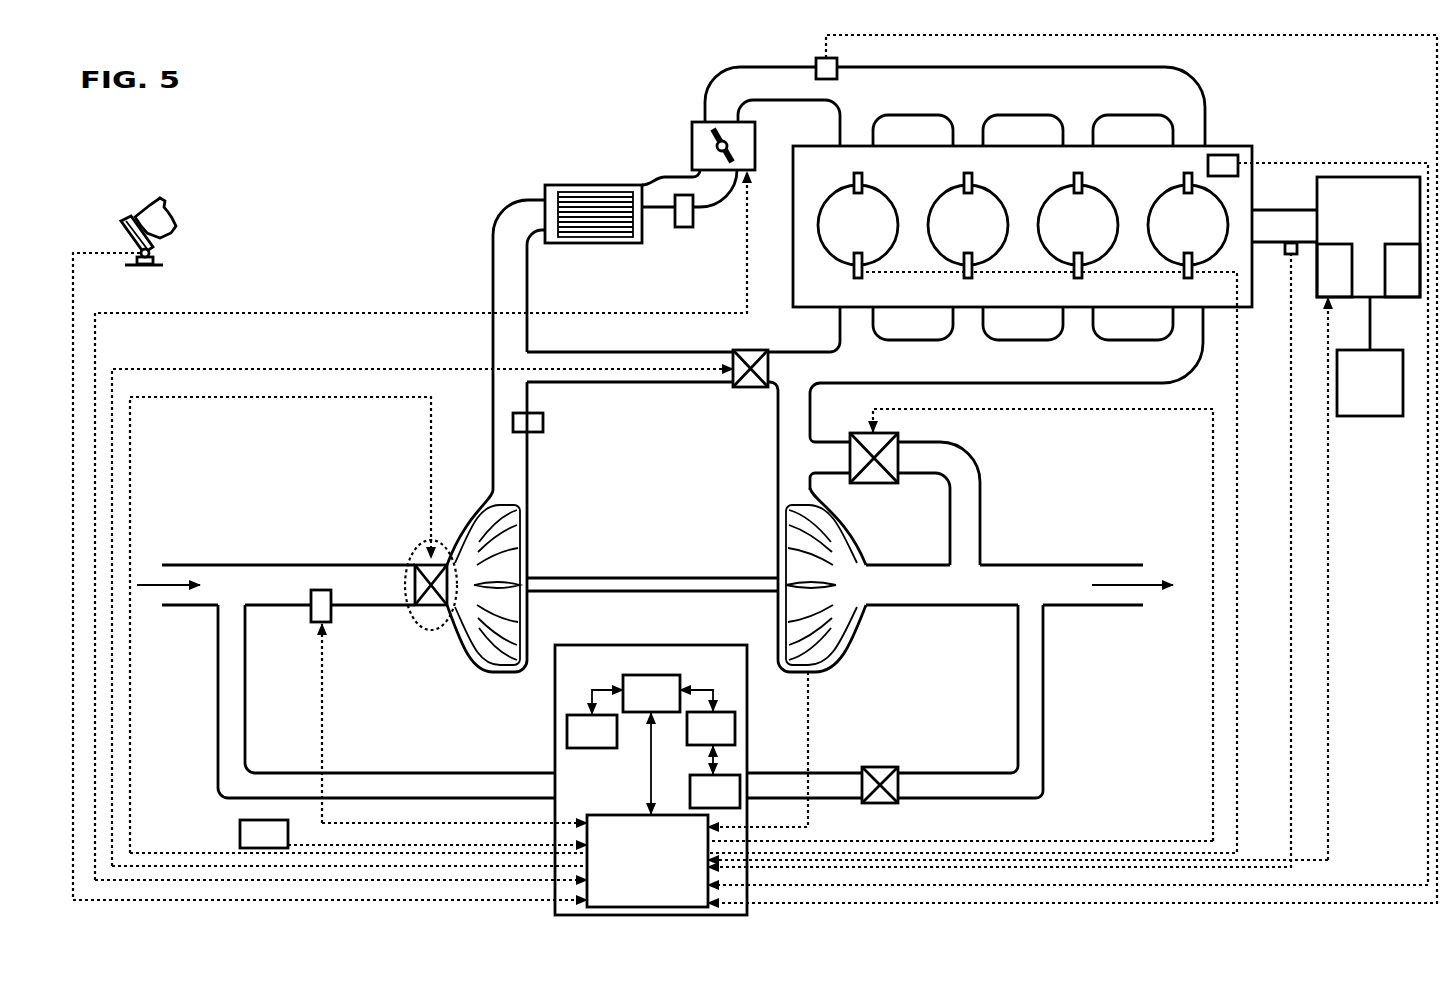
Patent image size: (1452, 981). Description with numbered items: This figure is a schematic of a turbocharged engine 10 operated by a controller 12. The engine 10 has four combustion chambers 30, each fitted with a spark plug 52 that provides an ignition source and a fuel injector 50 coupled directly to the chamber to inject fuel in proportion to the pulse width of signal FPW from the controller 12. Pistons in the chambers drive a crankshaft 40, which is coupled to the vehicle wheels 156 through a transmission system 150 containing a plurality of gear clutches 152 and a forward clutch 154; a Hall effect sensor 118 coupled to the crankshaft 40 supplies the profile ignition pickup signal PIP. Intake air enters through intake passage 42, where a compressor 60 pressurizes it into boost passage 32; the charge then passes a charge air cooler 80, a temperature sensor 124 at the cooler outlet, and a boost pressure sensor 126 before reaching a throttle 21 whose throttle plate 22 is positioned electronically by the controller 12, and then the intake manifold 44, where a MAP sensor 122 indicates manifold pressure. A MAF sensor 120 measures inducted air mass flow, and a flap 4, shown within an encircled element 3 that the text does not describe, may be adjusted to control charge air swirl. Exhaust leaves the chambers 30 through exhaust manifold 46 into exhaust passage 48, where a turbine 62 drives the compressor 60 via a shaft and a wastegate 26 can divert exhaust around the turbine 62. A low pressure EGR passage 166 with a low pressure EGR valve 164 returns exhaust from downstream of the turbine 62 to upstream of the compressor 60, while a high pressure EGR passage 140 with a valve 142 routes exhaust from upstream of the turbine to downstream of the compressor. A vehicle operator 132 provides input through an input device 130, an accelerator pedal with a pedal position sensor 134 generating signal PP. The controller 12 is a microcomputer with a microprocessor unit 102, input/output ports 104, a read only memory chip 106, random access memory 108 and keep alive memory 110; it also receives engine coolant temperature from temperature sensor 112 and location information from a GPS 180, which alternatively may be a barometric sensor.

The intake valve region 3 is at (425, 543).
The flap 4 is at (415, 565).
The engine 10 is at (1111, 179).
The controller 12 is at (721, 674).
The throttle 21 is at (752, 174).
The throttle plate 22 is at (735, 164).
The wastegate 26 is at (898, 445).
The combustion chamber 30 is at (847, 237).
The boost passage 32 is at (529, 296).
The crankshaft 40 is at (1275, 210).
The intake passage 42 is at (204, 597).
The intake manifold 44 is at (869, 102).
The exhaust manifold 46 is at (844, 377).
The exhaust passage 48 is at (921, 597).
The fuel injector 50 is at (855, 278).
The spark plug 52 is at (860, 178).
The compressor 60 is at (480, 632).
The turbine 62 is at (820, 542).
The charge air cooler 80 is at (557, 185).
The microprocessor unit 102 is at (618, 686).
The input/output ports 104 is at (662, 902).
The read only memory chip 106 is at (565, 745).
The random access memory 108 is at (737, 717).
The keep alive memory 110 is at (740, 776).
The temperature sensor 112 is at (1232, 155).
The Hall effect sensor 118 is at (1290, 256).
The MAF sensor 120 is at (331, 613).
The MAP sensor 122 is at (837, 60).
The temperature sensor 124 is at (690, 228).
The boost pressure sensor 126 is at (545, 424).
The input device 130 is at (125, 232).
The vehicle operator 132 is at (172, 218).
The pedal position sensor 134 is at (151, 254).
The EGR passage 140 is at (633, 353).
The EGR valve 142 is at (760, 350).
The transmission system 150 is at (1354, 224).
The gear clutches 152 is at (1318, 290).
The forward clutch 154 is at (1386, 290).
The vehicle wheels 156 is at (1354, 395).
The low pressure EGR valve 164 is at (890, 767).
The low pressure EGR passage 166 is at (1048, 775).
The global positioning system 180 is at (413, 834).